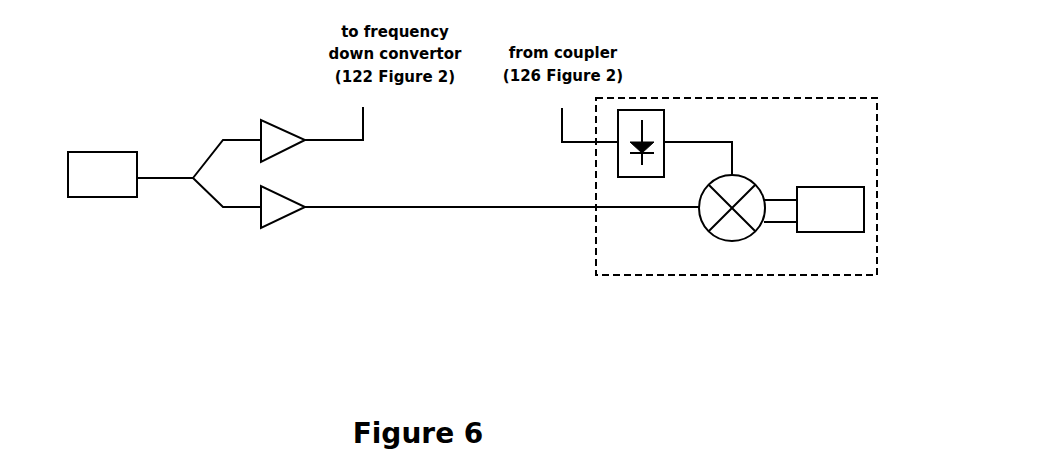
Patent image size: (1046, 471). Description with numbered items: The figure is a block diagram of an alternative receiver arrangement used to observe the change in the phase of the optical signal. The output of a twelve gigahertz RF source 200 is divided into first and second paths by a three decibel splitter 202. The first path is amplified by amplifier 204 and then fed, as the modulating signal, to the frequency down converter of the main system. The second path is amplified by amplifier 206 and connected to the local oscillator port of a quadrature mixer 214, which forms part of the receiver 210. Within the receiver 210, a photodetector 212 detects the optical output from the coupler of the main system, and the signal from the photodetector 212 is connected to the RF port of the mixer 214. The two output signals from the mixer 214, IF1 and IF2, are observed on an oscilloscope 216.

The RF source 200 is at (82, 150).
The 3 dB splitter 202 is at (208, 153).
The amplifier 204 is at (288, 147).
The amplifier 206 is at (292, 200).
The receiver 210 is at (747, 98).
The photodetector 212 is at (645, 110).
The quadrature mixer 214 is at (712, 235).
The oscilloscope 216 is at (864, 208).